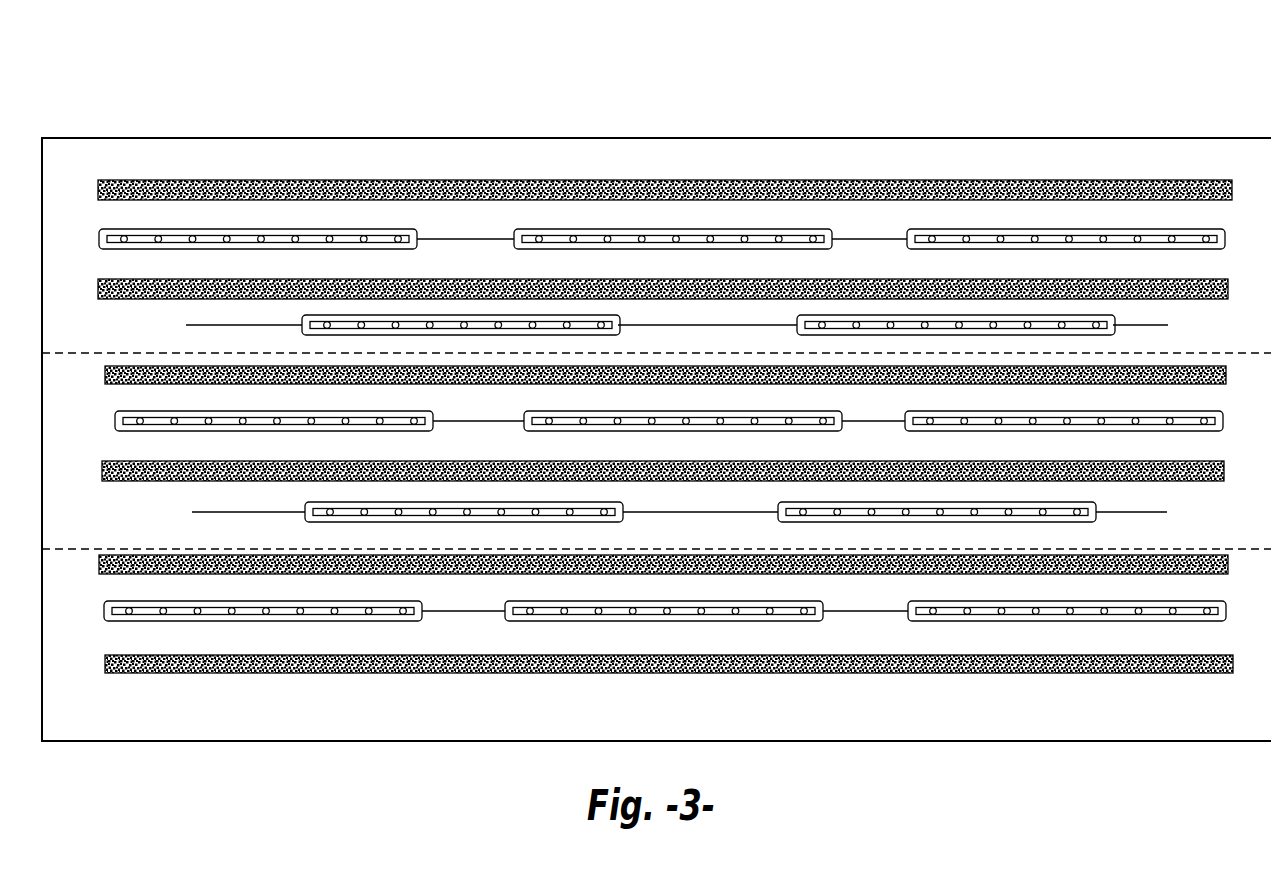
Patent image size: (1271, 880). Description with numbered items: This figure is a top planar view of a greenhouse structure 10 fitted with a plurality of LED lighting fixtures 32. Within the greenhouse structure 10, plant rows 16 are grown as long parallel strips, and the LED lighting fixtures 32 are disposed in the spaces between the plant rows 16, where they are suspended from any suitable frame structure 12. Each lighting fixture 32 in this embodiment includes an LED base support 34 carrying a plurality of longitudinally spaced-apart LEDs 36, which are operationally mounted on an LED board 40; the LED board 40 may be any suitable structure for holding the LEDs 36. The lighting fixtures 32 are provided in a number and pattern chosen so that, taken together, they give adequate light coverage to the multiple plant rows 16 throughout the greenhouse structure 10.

The greenhouse structure 10 is at (1203, 90).
The frame structure 12 is at (431, 237).
The plant rows 16 is at (797, 178).
The LED lighting fixture 32 is at (662, 432).
The LED base support 34 is at (153, 249).
The LEDs 36 is at (223, 242).
The LED board 40 is at (347, 242).